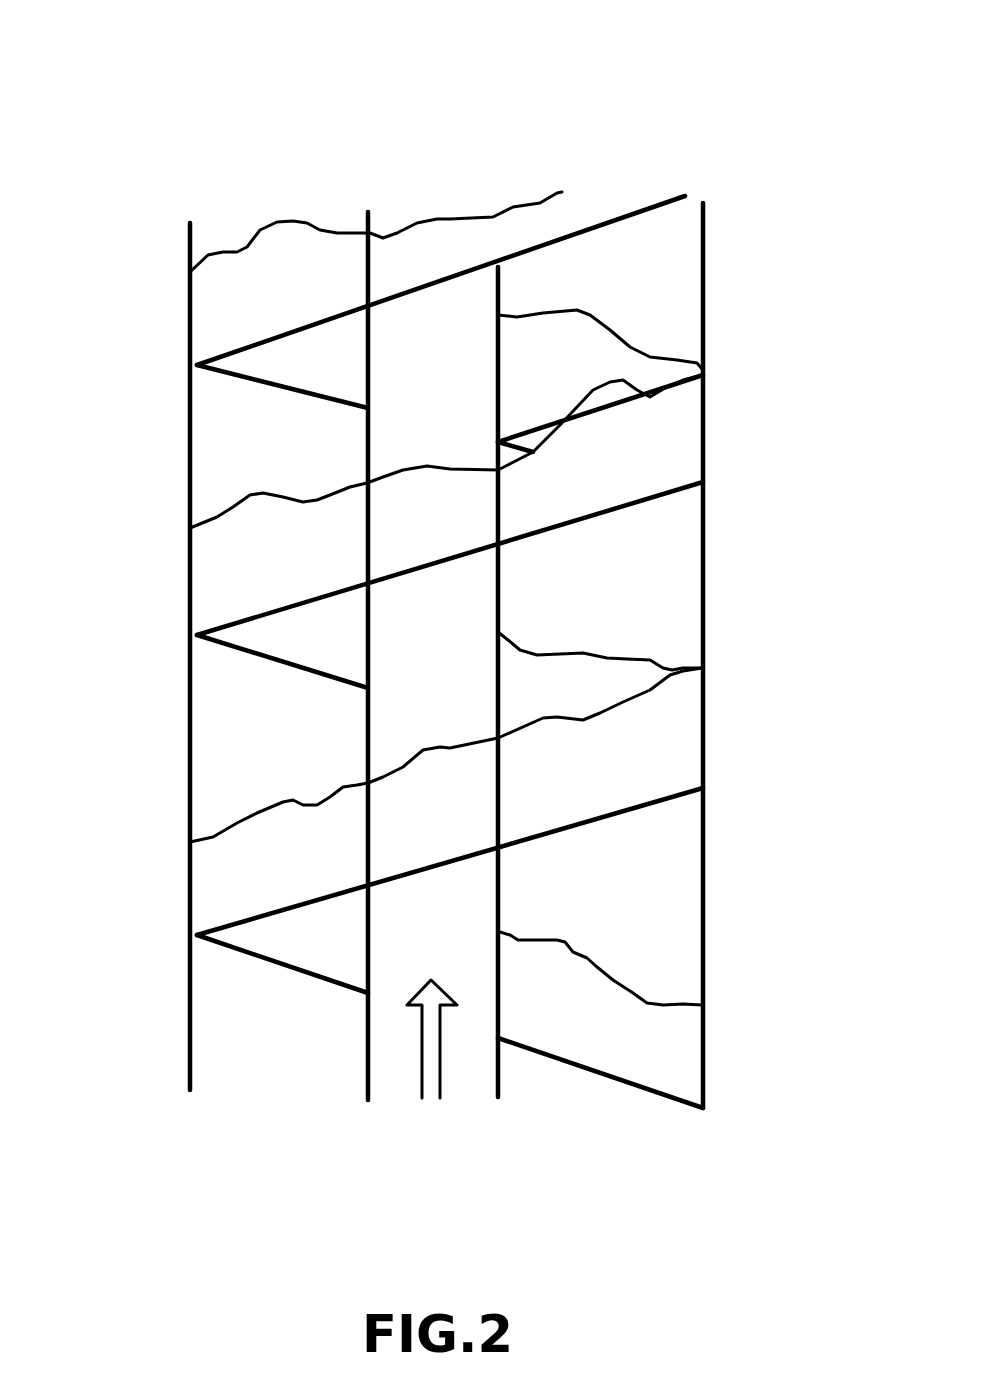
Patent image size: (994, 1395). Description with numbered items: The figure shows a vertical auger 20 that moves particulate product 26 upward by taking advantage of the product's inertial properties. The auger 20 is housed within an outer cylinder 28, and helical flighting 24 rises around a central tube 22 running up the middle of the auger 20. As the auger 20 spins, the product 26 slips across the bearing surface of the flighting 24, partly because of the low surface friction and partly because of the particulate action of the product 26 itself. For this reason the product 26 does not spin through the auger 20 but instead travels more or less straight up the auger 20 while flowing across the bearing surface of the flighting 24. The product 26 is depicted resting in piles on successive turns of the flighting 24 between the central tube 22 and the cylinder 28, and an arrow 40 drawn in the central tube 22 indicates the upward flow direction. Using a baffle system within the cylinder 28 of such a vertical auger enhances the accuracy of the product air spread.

The auger 20 is at (206, 70).
The central tube 22 is at (370, 437).
The flighting 24 is at (652, 497).
The product 26 is at (232, 304).
The cylinder 28 is at (705, 920).
The air flow arrow 40 is at (422, 1047).